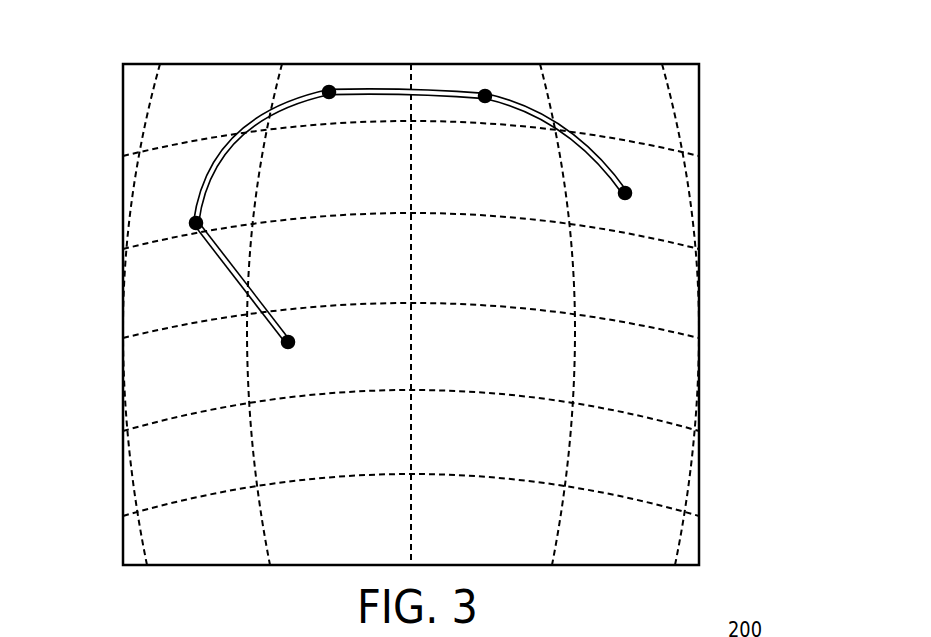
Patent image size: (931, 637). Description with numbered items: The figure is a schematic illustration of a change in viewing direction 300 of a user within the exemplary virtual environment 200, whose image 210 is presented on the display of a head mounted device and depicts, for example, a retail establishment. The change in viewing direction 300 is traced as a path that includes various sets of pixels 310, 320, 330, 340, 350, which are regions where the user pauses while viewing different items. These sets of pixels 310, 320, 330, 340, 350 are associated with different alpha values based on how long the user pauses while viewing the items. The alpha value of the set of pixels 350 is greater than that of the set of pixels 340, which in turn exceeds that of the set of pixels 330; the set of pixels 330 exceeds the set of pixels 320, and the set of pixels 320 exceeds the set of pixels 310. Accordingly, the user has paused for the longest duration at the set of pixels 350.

The virtual environment 200 is at (694, 49).
The image 210 is at (455, 314).
The change in viewing direction 300 is at (155, 308).
The set of pixels 310 is at (176, 395).
The set of pixels 320 is at (124, 259).
The set of pixels 330 is at (177, 157).
The set of pixels 340 is at (544, 100).
The set of pixels 350 is at (632, 149).